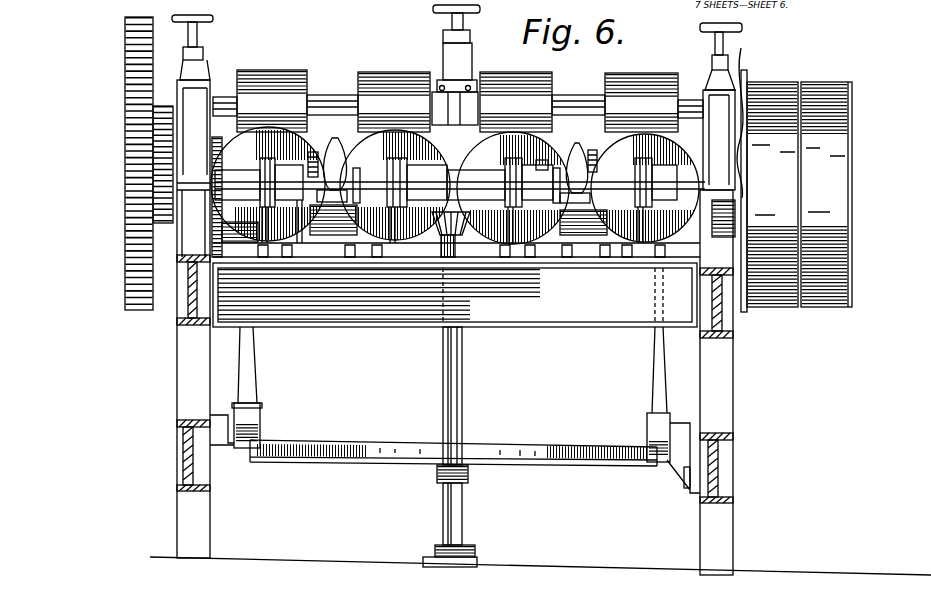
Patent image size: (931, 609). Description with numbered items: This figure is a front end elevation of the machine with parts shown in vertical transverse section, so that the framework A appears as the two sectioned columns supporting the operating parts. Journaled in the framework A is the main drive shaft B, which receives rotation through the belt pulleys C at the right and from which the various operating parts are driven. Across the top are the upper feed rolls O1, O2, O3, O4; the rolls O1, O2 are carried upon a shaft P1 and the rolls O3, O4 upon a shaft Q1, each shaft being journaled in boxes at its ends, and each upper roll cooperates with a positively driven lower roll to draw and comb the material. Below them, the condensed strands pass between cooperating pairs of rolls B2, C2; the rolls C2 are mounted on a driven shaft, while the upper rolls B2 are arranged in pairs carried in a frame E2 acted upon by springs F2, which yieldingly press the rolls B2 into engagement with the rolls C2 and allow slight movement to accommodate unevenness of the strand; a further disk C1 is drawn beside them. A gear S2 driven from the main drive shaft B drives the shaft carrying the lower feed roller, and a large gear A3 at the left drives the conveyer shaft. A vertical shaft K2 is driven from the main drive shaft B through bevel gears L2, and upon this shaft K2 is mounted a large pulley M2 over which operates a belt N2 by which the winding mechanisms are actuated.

The large gear A3 is at (127, 42).
The gear S2 is at (163, 102).
The upper feed roll O4 is at (268, 82).
The shaft Q1 is at (323, 97).
The upper feed roll O3 is at (388, 78).
The upper feed roll O2 is at (500, 82).
The shaft P1 is at (567, 107).
The upper feed roll O1 is at (633, 85).
The main drive shaft B is at (747, 114).
The upper roll B2 is at (516, 168).
The frame E2 is at (540, 170).
The roll C2 is at (528, 205).
The cutter disk C1 is at (660, 208).
The spring F2 is at (427, 197).
The belt N2 is at (250, 368).
The framework A is at (376, 314).
The bevel gears L2 is at (440, 210).
The vertical shaft K2 is at (464, 368).
The large pulley M2 is at (367, 452).
The belt pulleys C is at (822, 292).